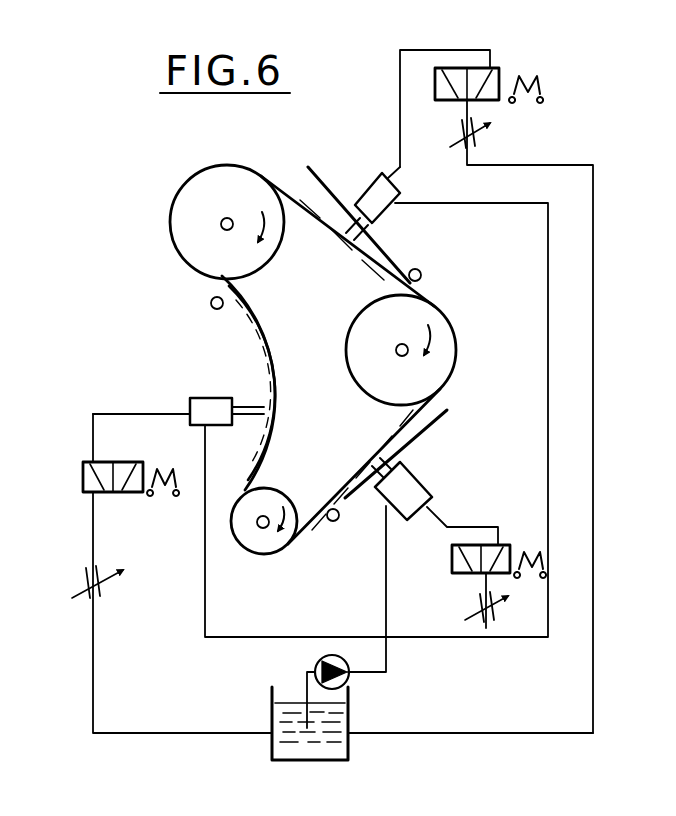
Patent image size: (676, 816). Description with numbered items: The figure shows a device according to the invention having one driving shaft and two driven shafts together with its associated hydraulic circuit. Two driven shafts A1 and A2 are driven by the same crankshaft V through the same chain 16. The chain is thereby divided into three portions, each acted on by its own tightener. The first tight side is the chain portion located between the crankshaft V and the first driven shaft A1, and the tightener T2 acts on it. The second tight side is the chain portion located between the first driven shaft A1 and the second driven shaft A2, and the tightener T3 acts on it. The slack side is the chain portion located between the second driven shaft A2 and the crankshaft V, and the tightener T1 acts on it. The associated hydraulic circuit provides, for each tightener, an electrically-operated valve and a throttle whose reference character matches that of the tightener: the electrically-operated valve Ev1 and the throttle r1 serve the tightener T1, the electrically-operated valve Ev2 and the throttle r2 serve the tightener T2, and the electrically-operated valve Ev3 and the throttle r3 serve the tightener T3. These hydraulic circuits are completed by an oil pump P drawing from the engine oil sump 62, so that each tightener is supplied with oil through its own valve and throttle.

The chain 16 is at (438, 398).
The engine oil sump 62 is at (312, 762).
The first driven shaft A1 is at (401, 350).
The second driven shaft A2 is at (227, 222).
The crankshaft V is at (264, 521).
The tightener T1 is at (178, 399).
The tightener T2 is at (423, 565).
The tightener T3 is at (376, 402).
The electrically-operated valve Ev1 is at (131, 455).
The electrically-operated valve Ev2 is at (499, 542).
The electrically-operated valve Ev3 is at (474, 105).
The throttle r1 is at (172, 612).
The throttle r2 is at (492, 605).
The throttle r3 is at (521, 416).
The oil pump P is at (318, 686).